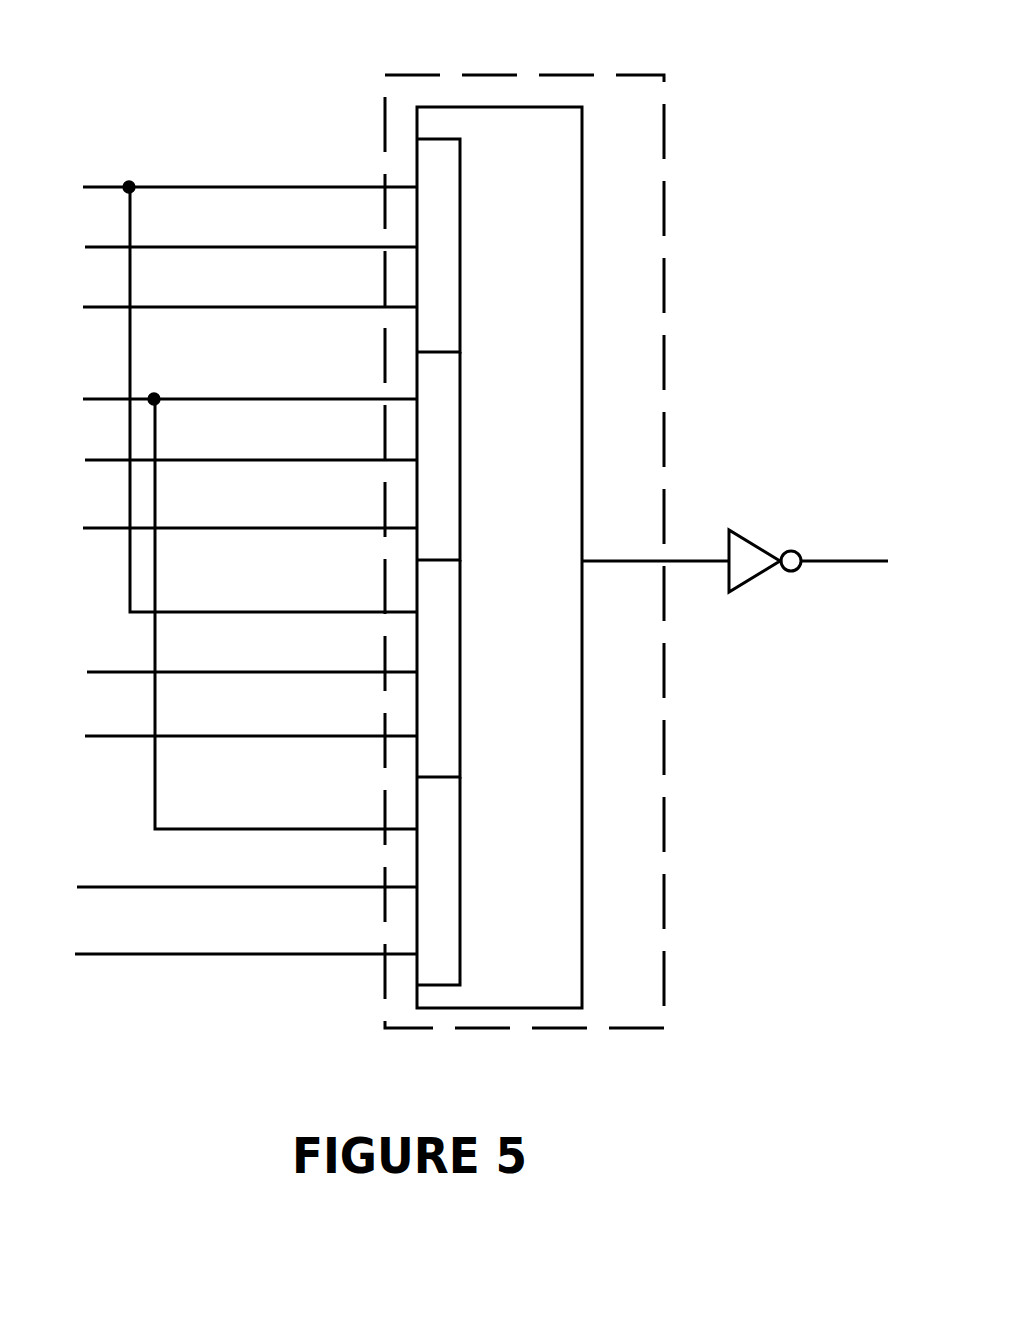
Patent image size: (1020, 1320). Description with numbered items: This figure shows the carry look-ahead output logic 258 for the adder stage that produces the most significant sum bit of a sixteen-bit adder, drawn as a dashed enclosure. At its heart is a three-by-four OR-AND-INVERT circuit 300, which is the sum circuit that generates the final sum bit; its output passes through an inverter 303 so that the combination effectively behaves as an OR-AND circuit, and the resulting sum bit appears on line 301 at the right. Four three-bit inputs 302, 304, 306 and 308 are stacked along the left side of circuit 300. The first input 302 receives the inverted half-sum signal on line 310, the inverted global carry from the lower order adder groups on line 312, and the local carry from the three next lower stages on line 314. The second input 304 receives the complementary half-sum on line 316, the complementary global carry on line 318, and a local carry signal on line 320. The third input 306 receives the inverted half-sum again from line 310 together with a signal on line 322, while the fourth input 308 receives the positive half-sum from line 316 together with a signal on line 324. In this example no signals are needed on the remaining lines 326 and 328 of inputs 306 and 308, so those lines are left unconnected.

The carry look-ahead output logic 258 is at (664, 240).
The 3×4 OR-AND-INVERT circuit 300 is at (582, 178).
The line 301 is at (831, 565).
The input 302 is at (452, 254).
The inverter 303 is at (750, 538).
The input 304 is at (452, 452).
The input 306 is at (452, 667).
The input 308 is at (452, 885).
The line 310 is at (110, 186).
The line 312 is at (110, 246).
The line 314 is at (110, 306).
The line 316 is at (108, 398).
The line 318 is at (113, 459).
The line 320 is at (108, 527).
The line 322 is at (110, 671).
The line 324 is at (108, 886).
The line 326 is at (115, 735).
The line 328 is at (100, 953).